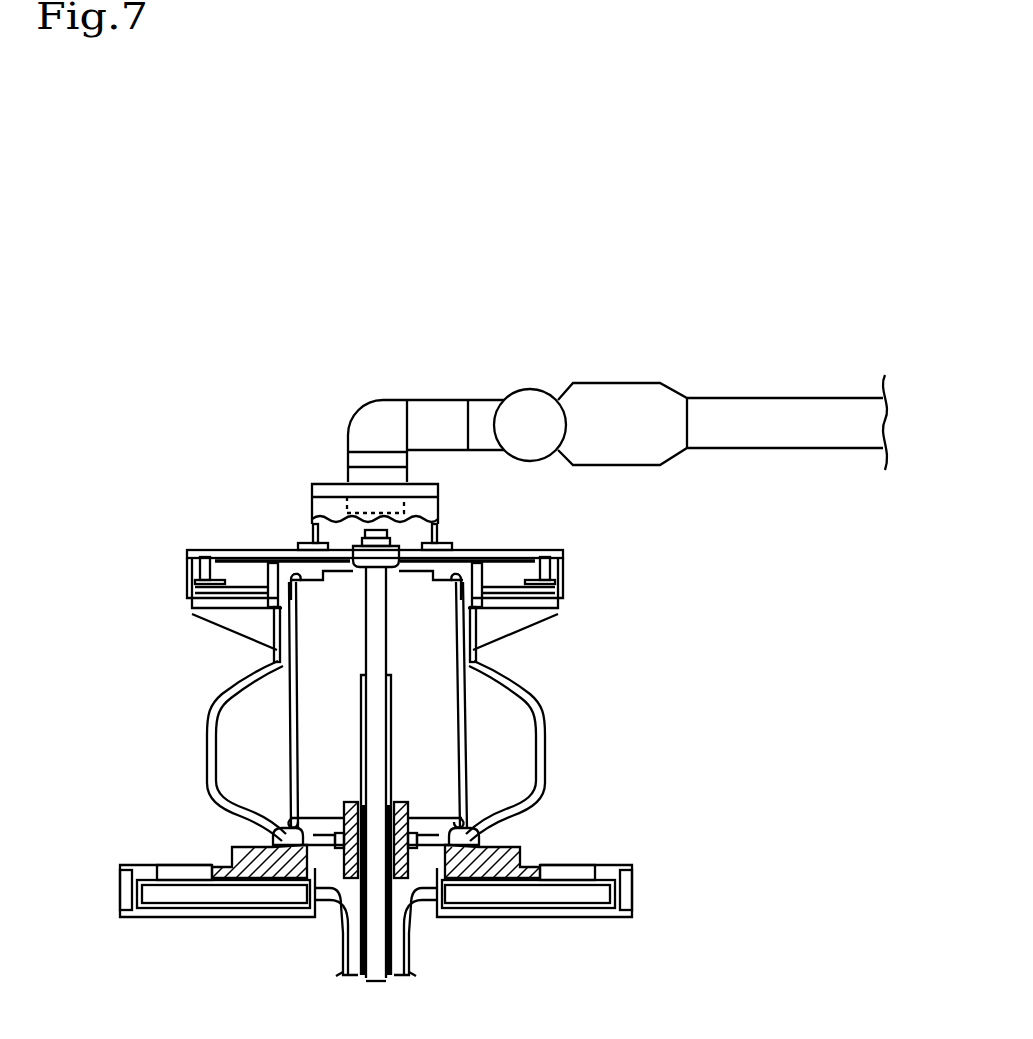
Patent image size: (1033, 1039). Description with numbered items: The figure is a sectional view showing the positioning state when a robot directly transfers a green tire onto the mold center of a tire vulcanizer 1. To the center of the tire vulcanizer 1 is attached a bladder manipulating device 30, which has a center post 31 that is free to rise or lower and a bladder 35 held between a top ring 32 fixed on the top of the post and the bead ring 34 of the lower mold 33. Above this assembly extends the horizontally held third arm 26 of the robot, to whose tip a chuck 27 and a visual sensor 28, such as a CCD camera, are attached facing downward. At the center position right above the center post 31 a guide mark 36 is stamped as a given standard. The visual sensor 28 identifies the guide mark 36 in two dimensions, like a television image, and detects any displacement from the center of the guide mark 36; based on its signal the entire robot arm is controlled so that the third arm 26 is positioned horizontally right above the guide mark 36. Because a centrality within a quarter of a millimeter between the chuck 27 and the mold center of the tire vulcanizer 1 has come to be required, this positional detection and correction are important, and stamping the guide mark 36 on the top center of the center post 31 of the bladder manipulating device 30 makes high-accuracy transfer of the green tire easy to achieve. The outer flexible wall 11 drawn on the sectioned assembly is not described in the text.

The tire vulcanizer 1 is at (682, 892).
The diaphragm 11 is at (538, 740).
The third arm 26 is at (437, 403).
The chuck 27 is at (570, 567).
The visual sensor 28 is at (348, 505).
The bladder manipulating device 30 is at (425, 934).
The center post 31 is at (390, 637).
The top ring 32 is at (447, 552).
The lower mold 33 is at (520, 852).
The bead ring 34 is at (497, 825).
The bladder 35 is at (460, 712).
The guide mark 36 is at (314, 534).